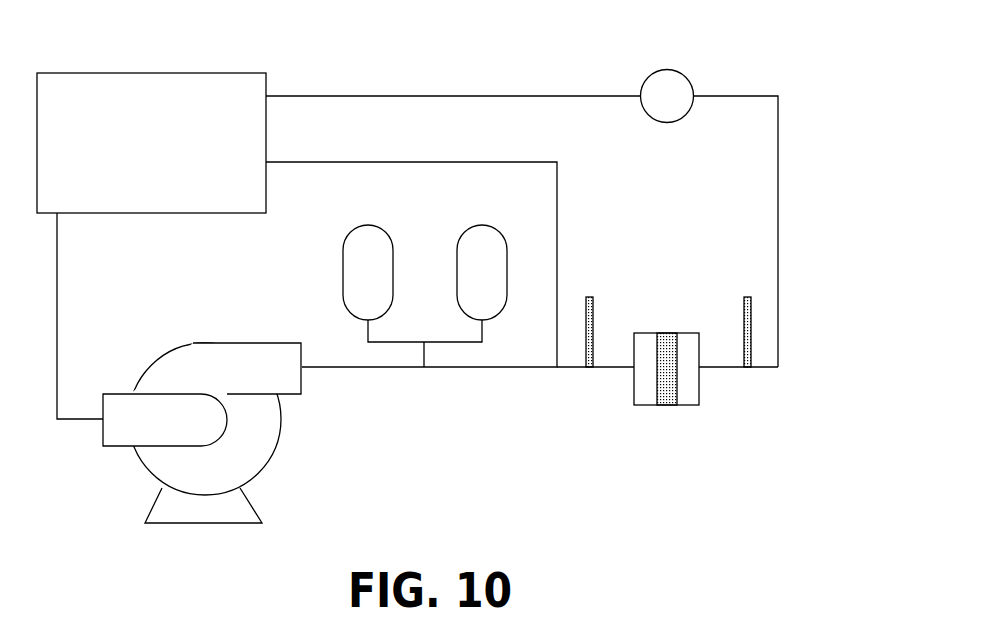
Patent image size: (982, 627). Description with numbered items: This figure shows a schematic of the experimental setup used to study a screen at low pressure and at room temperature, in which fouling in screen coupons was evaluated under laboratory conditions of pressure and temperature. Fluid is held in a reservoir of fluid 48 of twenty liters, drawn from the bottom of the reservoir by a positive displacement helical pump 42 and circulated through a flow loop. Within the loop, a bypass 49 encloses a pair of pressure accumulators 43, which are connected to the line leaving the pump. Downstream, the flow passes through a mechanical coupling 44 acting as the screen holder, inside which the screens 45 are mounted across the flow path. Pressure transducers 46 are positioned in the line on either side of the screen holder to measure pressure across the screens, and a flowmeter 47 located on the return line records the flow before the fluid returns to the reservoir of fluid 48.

The positive displacement helical pump 42 is at (158, 503).
The pressure accumulators 43 is at (372, 208).
The mechanical coupling (screen holder) 44 is at (633, 388).
The screens 45 is at (668, 403).
The pressure transducers 46 is at (593, 315).
The flowmeter 47 is at (668, 70).
The reservoir of fluid 48 is at (130, 73).
The bypass 49 is at (450, 162).